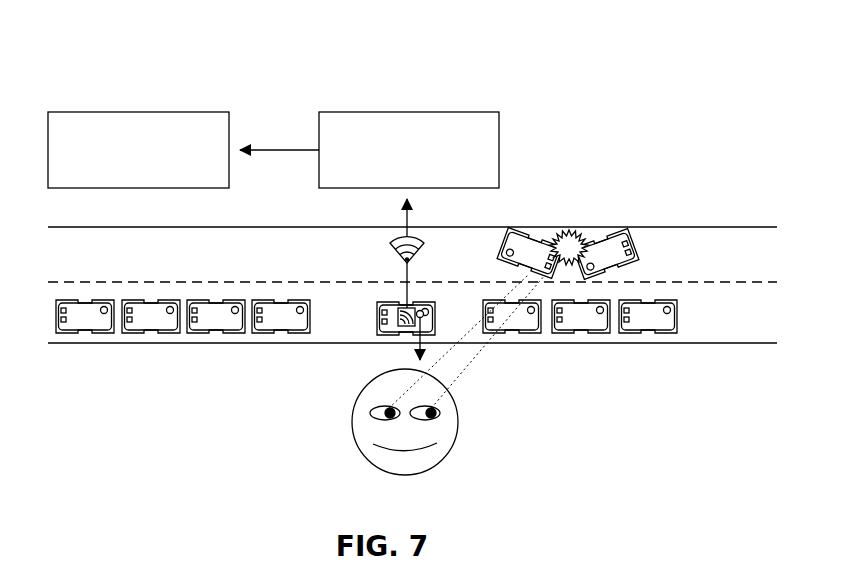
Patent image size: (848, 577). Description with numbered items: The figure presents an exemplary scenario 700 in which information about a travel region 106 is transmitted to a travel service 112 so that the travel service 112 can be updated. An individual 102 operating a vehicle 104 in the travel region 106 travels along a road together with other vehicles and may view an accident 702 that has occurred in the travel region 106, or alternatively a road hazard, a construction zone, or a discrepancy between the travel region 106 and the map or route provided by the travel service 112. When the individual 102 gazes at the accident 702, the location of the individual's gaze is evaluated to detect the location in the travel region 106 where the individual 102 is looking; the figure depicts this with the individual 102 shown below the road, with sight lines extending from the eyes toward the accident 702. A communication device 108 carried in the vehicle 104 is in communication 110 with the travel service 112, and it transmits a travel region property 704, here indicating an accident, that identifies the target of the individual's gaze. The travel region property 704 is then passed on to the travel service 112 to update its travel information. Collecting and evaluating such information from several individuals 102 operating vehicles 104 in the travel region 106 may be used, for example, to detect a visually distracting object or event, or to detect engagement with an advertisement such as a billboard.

The exemplary scenario 700 is at (116, 54).
The travel service 112 is at (110, 112).
The travel region property 704 is at (380, 112).
The travel region 106 is at (702, 227).
The accident 702 is at (577, 232).
The vehicle 104 is at (377, 318).
The communication device 108 is at (400, 306).
The communication 110 is at (396, 250).
The individual 102 is at (423, 311).